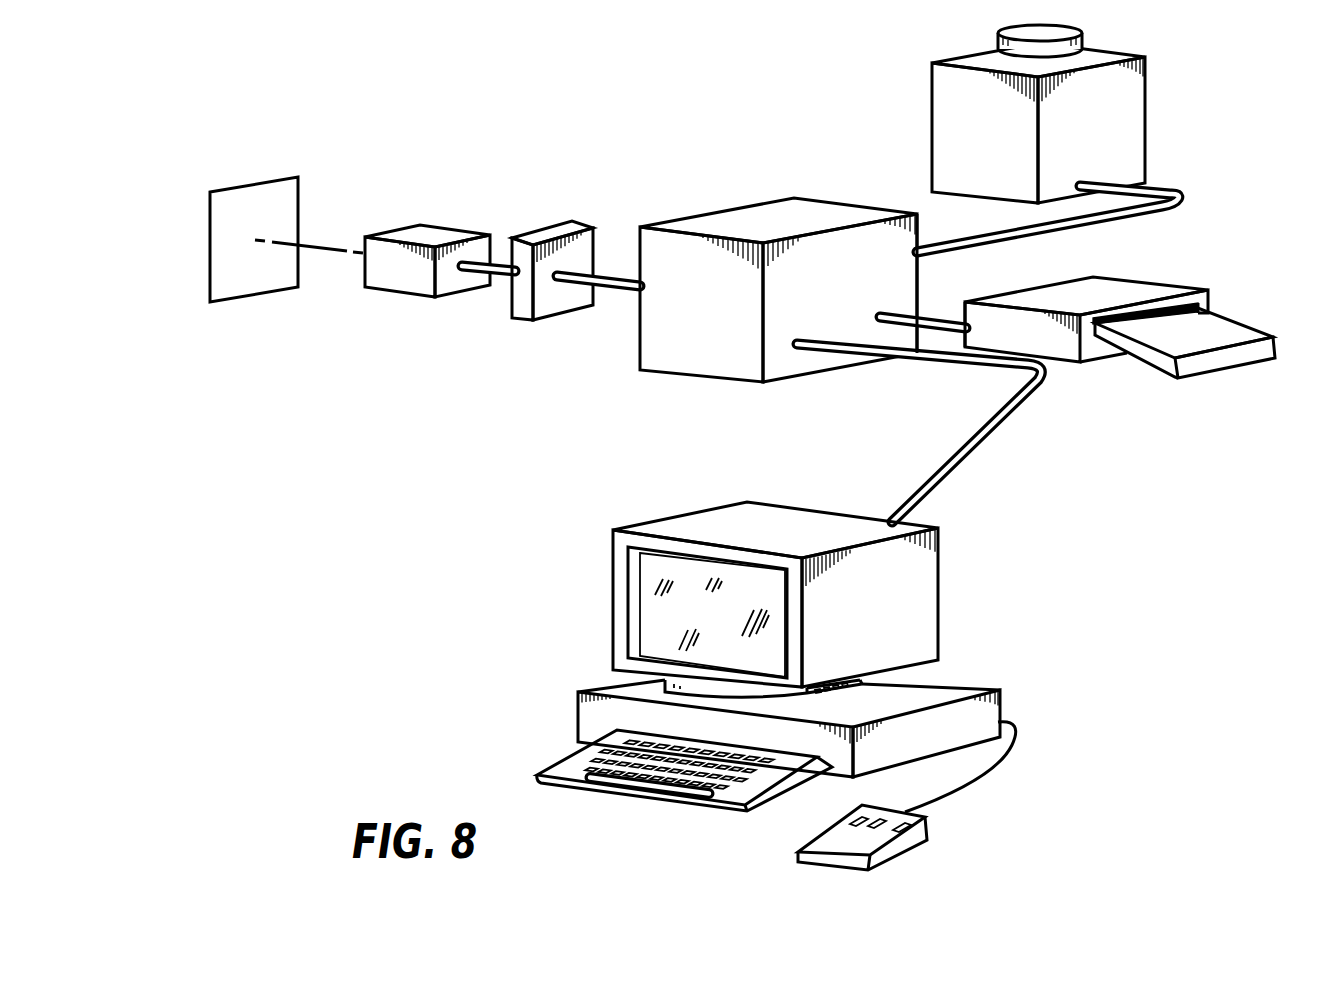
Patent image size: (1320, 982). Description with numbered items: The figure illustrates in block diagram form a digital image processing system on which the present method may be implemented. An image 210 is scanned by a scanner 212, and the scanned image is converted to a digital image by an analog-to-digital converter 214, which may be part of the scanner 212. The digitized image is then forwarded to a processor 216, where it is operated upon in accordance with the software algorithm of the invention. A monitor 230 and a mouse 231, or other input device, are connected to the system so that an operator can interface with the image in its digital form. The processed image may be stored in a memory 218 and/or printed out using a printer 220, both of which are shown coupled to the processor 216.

The image 210 is at (254, 188).
The scanner 212 is at (409, 233).
The analog-to-digital converter 214 is at (581, 307).
The processor 216 is at (840, 212).
The memory 218 is at (1133, 133).
The printer 220 is at (1038, 297).
The monitor 230 is at (830, 520).
The mouse 231 is at (932, 833).